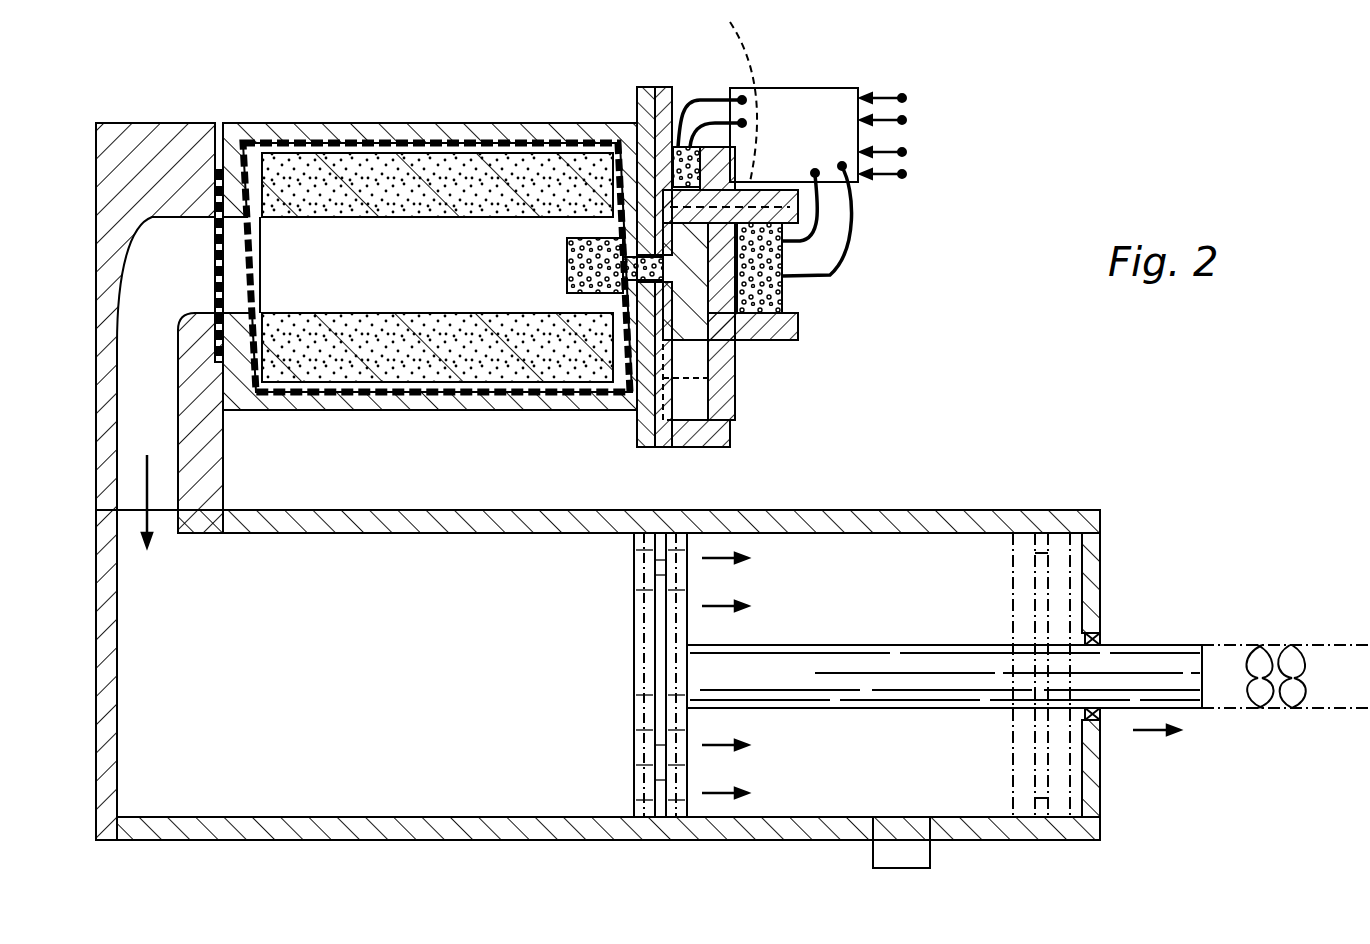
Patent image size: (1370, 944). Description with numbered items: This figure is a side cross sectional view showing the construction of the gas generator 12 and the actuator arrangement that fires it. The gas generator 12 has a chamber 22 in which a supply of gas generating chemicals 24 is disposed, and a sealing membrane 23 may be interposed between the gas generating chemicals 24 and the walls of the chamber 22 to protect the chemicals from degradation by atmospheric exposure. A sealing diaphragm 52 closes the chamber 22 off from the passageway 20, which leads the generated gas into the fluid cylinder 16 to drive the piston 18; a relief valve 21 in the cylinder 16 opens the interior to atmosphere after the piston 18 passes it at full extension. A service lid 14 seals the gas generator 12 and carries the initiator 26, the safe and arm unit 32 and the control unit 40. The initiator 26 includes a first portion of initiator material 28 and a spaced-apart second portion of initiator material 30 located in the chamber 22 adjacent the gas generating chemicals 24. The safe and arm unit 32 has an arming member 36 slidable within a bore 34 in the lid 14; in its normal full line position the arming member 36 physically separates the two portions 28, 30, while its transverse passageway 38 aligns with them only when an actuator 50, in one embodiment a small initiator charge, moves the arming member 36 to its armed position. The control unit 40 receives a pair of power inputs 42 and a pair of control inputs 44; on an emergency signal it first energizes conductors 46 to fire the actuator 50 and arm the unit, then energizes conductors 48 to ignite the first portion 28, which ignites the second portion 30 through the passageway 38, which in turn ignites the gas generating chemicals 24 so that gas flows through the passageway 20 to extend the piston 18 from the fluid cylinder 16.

The gas generator 12 is at (882, 383).
The service lid 14 is at (728, 428).
The fluid cylinder 16 is at (328, 510).
The piston 18 is at (640, 643).
The passageway 20 is at (180, 443).
The relief valve 21 is at (890, 845).
The chamber 22 is at (372, 170).
The sealing membrane 23 is at (213, 272).
The gas generating chemicals 24 is at (416, 175).
The initiator 26 is at (800, 291).
The first portion of initiator material 28 is at (781, 318).
The second portion of initiator material 30 is at (567, 262).
The safe and arm unit 32 is at (690, 370).
The bore 34 is at (688, 352).
The arming member 36 is at (683, 303).
The transverse passageway 38 is at (735, 25).
The control unit 40 is at (793, 117).
The power inputs 42 is at (890, 120).
The control inputs 44 is at (887, 157).
The conductors 46 is at (690, 145).
The conductors 48 is at (858, 215).
The actuator 50 is at (673, 160).
The sealing diaphragm 52 is at (213, 247).